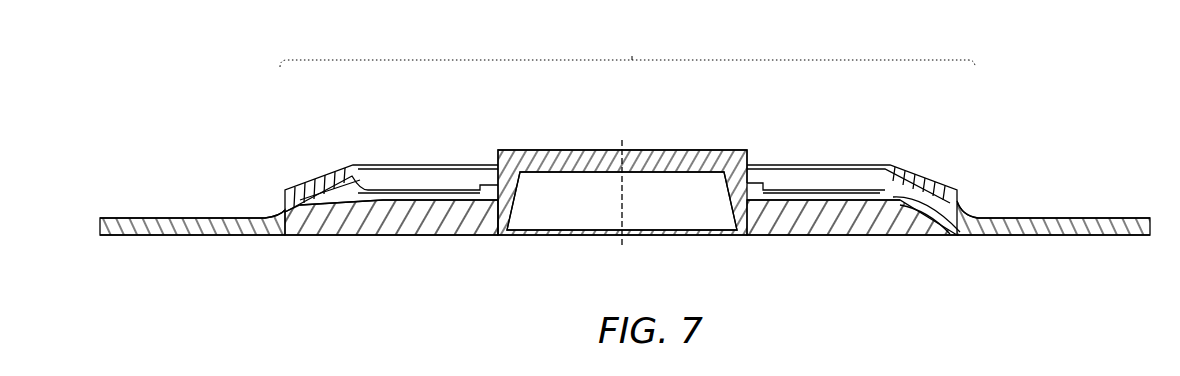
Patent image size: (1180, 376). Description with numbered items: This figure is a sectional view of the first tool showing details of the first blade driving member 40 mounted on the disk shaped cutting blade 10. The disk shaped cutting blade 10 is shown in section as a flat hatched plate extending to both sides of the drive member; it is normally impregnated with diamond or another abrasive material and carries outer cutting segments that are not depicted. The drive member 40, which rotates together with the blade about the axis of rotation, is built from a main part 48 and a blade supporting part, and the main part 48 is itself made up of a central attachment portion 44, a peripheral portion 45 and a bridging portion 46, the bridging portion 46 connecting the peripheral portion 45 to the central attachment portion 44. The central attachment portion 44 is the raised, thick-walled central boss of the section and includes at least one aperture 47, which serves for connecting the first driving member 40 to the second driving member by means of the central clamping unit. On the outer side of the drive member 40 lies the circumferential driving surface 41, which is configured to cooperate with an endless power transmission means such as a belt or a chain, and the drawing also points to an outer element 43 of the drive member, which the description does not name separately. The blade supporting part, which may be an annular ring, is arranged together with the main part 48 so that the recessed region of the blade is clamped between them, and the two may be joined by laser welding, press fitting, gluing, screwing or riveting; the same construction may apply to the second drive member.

The disk shaped cutting blade 10 is at (1104, 218).
The first blade driving member 40 is at (627, 39).
The circumferential driving surface 41 is at (310, 178).
The cover shell 43 is at (321, 160).
The central attachment portion 44 is at (545, 240).
The peripheral portion 45 is at (922, 241).
The bridging portion 46 is at (778, 241).
The aperture 47 is at (578, 165).
The main part 48 is at (688, 113).